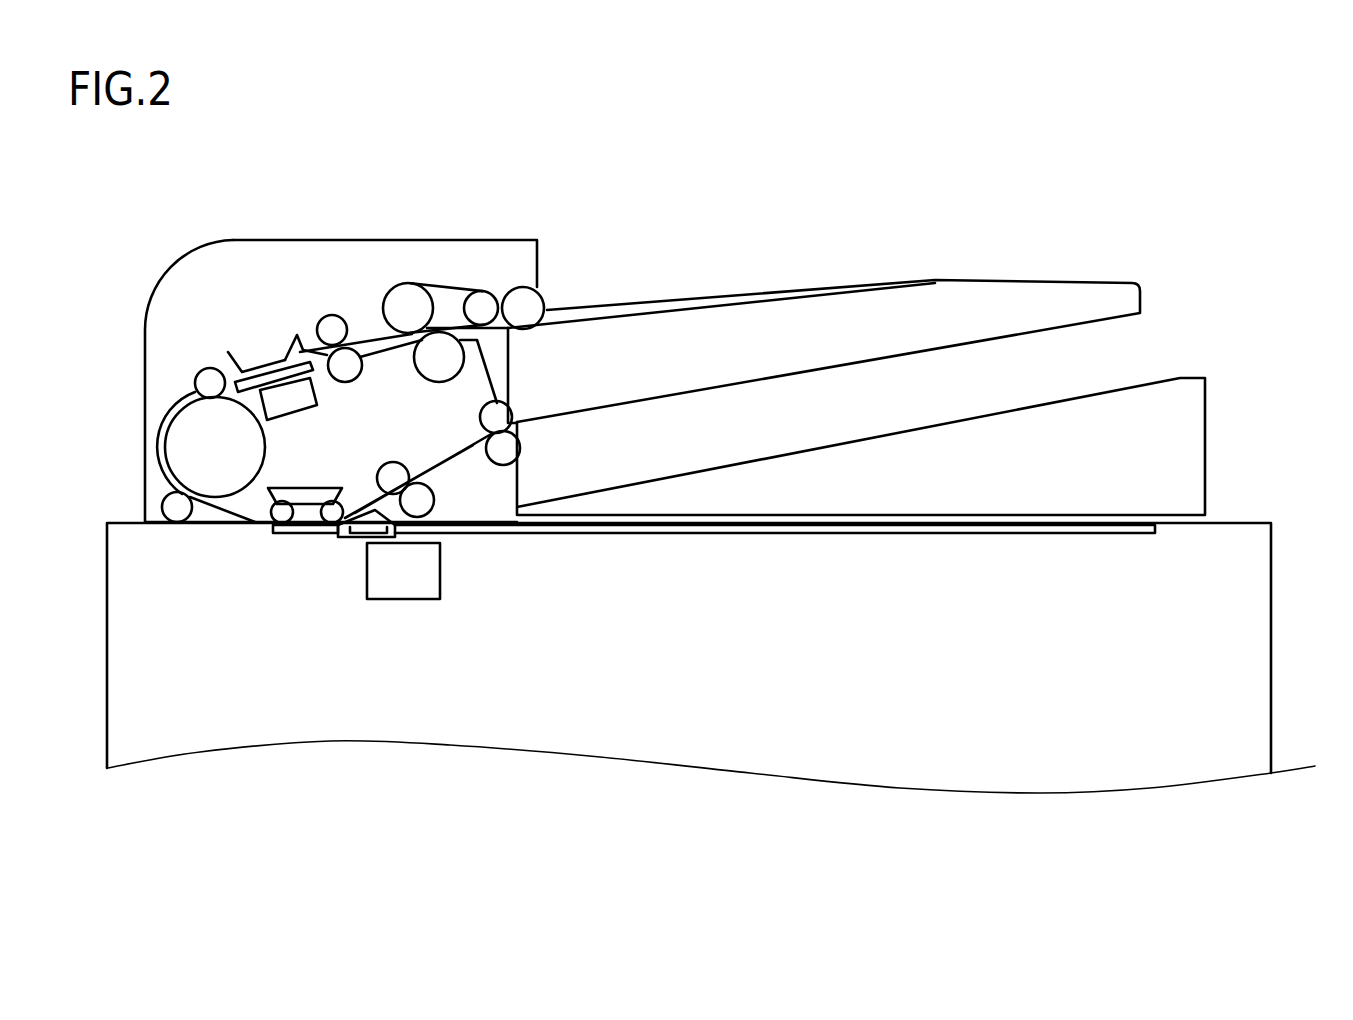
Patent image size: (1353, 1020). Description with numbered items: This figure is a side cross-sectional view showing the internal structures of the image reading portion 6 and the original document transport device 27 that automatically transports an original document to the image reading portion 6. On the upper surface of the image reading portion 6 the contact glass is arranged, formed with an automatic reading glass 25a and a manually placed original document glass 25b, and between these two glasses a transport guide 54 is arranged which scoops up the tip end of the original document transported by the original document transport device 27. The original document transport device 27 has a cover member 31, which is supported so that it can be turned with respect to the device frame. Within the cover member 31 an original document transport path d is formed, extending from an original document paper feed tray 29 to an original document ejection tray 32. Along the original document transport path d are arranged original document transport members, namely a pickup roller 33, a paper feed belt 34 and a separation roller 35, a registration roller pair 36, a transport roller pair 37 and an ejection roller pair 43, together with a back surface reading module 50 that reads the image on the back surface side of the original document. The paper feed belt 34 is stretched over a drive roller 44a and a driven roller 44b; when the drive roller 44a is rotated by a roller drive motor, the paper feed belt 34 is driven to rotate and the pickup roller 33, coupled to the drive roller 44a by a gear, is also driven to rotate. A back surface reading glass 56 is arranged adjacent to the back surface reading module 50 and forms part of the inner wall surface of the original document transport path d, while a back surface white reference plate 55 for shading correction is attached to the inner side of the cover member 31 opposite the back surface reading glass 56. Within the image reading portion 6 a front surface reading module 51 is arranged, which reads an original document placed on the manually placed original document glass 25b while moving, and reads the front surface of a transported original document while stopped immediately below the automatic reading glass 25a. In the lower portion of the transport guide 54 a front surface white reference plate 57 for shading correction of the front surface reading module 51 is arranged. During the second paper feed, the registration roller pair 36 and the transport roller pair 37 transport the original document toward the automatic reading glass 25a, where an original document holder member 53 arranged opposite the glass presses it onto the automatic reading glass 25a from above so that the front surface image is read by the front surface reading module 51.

The image reading portion 6 is at (1272, 590).
The automatic reading glass 25a is at (297, 537).
The manually placed original document glass 25b is at (753, 535).
The original document transport device 27 is at (749, 228).
The original document paper feed tray 29 is at (1060, 290).
The cover member 31 is at (213, 253).
The original document ejection tray 32 is at (912, 430).
The pickup roller 33 is at (545, 302).
The paper feed belt 34 is at (438, 285).
The separation roller 35 is at (439, 370).
The registration roller pair 36 is at (327, 327).
The transport roller pair 37 is at (423, 502).
The ejection roller pair 43 is at (508, 453).
The drive roller 44a is at (408, 300).
The driven roller 44b is at (483, 302).
The back surface reading module 50 is at (305, 398).
The front surface reading module 51 is at (397, 585).
The original document holder member 53 is at (307, 493).
The transport guide 54 is at (362, 520).
The back surface white reference plate 55 is at (272, 358).
The back surface reading glass 56 is at (223, 367).
The front surface white reference plate 57 is at (365, 540).
The original document transport path d is at (180, 412).